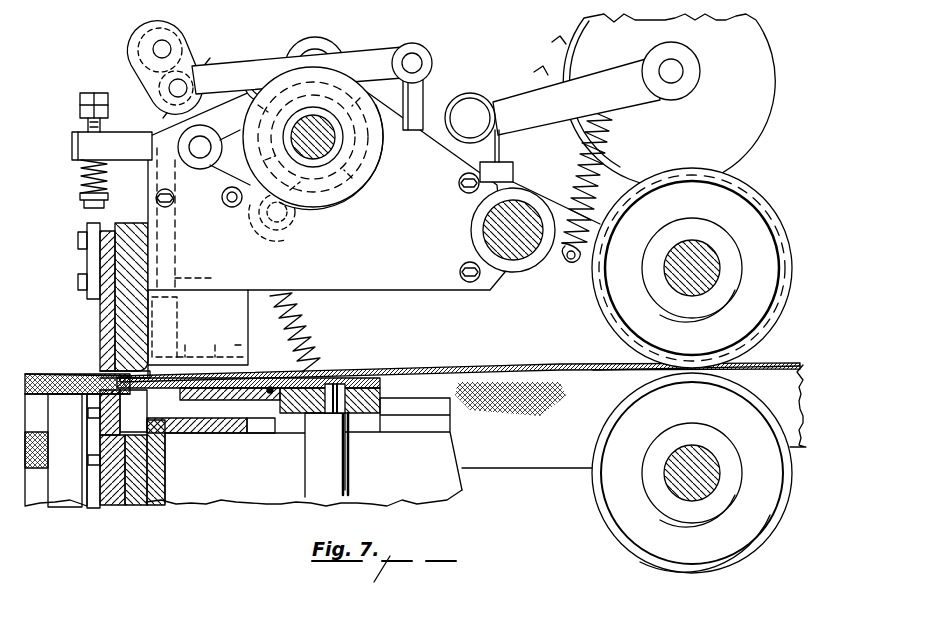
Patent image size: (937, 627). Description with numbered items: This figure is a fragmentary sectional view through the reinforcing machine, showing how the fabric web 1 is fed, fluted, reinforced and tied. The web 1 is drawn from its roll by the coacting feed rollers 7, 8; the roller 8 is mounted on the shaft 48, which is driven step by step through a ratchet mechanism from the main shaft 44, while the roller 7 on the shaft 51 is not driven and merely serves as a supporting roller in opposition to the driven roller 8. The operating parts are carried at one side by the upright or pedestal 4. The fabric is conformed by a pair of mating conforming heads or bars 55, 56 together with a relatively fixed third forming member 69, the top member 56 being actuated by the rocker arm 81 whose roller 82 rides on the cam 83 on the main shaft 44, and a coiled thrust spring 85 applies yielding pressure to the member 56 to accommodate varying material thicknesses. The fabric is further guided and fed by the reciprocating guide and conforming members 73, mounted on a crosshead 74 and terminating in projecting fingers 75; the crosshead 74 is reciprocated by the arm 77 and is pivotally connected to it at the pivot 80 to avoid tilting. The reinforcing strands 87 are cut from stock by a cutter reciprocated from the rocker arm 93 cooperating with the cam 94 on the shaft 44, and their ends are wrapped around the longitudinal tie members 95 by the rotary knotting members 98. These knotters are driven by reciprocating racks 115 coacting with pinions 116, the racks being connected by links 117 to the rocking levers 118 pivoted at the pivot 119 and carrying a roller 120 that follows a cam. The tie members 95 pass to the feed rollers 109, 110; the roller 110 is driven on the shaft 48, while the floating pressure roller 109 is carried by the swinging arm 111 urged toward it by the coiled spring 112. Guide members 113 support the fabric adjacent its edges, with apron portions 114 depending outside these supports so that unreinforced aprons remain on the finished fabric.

The web 1 is at (785, 367).
The upright or pedestal 4 is at (440, 480).
The feed roller 7 is at (735, 557).
The feed roller 8 is at (692, 253).
The main shaft 44 is at (323, 160).
The shaft 48 is at (687, 287).
The shaft 51 is at (692, 488).
The bottom conforming member 55 is at (120, 503).
The top conforming member 56 is at (110, 307).
The third forming member 69 is at (133, 260).
The guide and conforming members 73 is at (172, 380).
The crosshead 74 is at (212, 390).
The projecting fingers 75 is at (103, 373).
The arm 77 is at (330, 461).
The pivotal connection 80 is at (272, 388).
The rocker arm 81 is at (121, 140).
The roller 82 is at (258, 62).
The cam 83 is at (360, 160).
The coiled thrust spring 85 is at (80, 176).
The reinforcing strands 87 is at (67, 407).
The rocker arm 93 is at (238, 207).
The cam 94 is at (303, 208).
The longitudinal tie members 95 is at (497, 373).
The rotary knotting or tying members 98 is at (223, 363).
The feed roller 109 is at (763, 50).
The feed roller 110 is at (728, 190).
The swinging arm 111 is at (645, 92).
The coiled spring 112 is at (580, 170).
The guide members 113 is at (62, 457).
The apron portions 114 is at (532, 455).
The reciprocating racks 115 is at (207, 162).
The gears or pinions 116 is at (192, 367).
The links 117 is at (172, 25).
The rocking levers 118 is at (372, 60).
The pivot 119 is at (413, 56).
The roller 120 is at (315, 40).